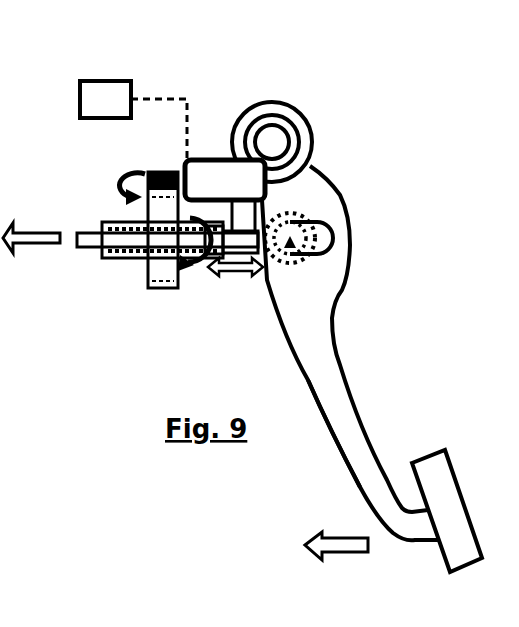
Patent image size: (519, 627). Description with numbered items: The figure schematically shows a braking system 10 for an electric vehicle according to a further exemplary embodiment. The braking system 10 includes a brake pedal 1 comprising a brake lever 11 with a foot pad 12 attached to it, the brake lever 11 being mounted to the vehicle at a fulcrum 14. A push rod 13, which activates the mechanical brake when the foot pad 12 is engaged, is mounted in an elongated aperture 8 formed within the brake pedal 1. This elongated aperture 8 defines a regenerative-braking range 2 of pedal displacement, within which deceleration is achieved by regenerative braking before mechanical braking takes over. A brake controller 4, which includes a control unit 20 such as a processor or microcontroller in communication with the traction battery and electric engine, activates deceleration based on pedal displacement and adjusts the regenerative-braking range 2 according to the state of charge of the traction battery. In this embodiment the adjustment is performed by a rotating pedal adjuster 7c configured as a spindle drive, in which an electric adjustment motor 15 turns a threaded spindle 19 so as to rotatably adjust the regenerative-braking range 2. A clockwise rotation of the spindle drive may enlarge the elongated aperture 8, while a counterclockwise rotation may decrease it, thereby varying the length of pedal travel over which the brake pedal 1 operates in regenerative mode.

The brake pedal 1 is at (355, 305).
The regenerative-braking range 2 is at (5, 498).
The brake controller 4 is at (188, 78).
The rotating pedal adjuster 7c is at (122, 298).
The elongated aperture 8 is at (282, 258).
The braking system 10 is at (370, 88).
The brake lever 11 is at (338, 358).
The foot pad 12 is at (425, 455).
The push rod 13 is at (84, 249).
The fulcrum 14 is at (311, 135).
The electric adjustment motor 15 is at (210, 158).
The threaded spindle 19 is at (184, 294).
The control unit 20 is at (128, 81).